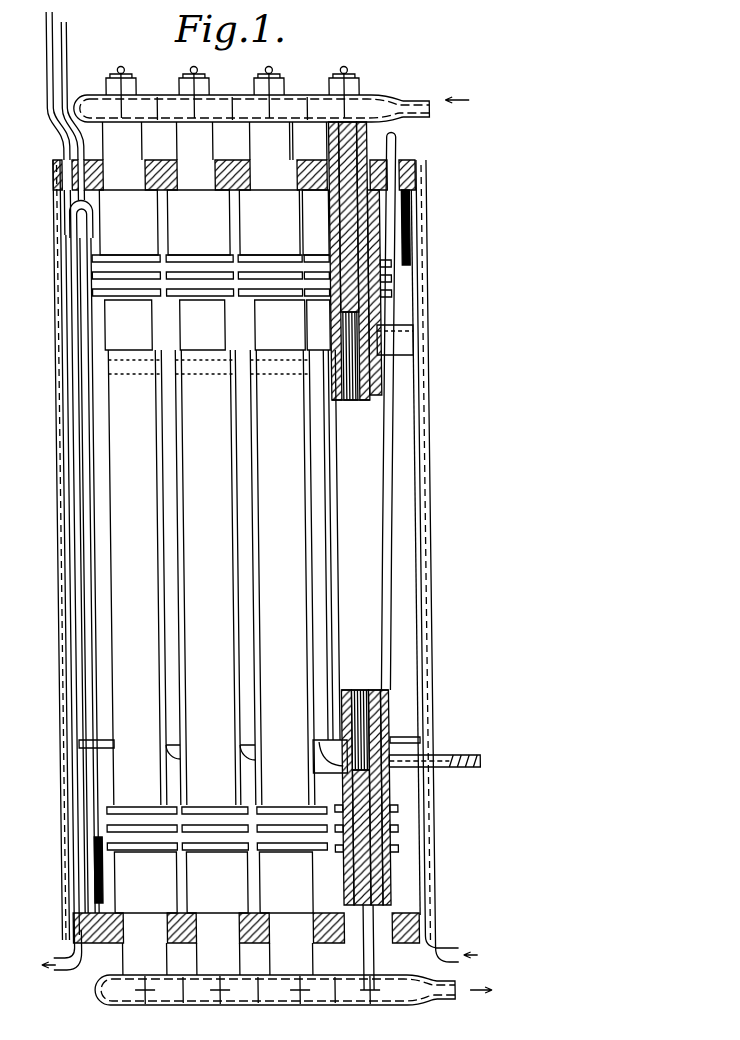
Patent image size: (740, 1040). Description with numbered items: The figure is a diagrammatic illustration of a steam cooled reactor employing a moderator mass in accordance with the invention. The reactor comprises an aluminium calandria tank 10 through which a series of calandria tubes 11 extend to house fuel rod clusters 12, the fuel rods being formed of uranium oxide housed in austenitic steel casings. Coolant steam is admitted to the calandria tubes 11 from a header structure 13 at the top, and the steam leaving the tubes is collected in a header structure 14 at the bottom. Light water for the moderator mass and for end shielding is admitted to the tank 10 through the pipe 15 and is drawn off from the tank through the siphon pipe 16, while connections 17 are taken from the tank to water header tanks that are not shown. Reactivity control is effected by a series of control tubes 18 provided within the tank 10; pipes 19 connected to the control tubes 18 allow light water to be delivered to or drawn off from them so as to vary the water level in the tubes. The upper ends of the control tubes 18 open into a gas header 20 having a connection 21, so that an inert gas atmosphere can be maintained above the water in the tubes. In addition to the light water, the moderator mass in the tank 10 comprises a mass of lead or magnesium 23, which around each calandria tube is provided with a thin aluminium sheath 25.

The calandria tank 10 is at (59, 593).
The calandria tubes 11 is at (365, 365).
The fuel rod clusters 12 is at (376, 394).
The header structure 13 is at (206, 103).
The header structure 14 is at (301, 1000).
The pipe 15 is at (420, 950).
The siphon pipe 16 is at (77, 787).
The connections 17 is at (49, 52).
The control tubes 18 is at (285, 455).
The pipes 19 is at (455, 769).
The gas header 20 is at (394, 341).
The connection 21 is at (396, 138).
The mass of lead or magnesium 23 is at (338, 410).
The aluminium sheath 25 is at (348, 543).